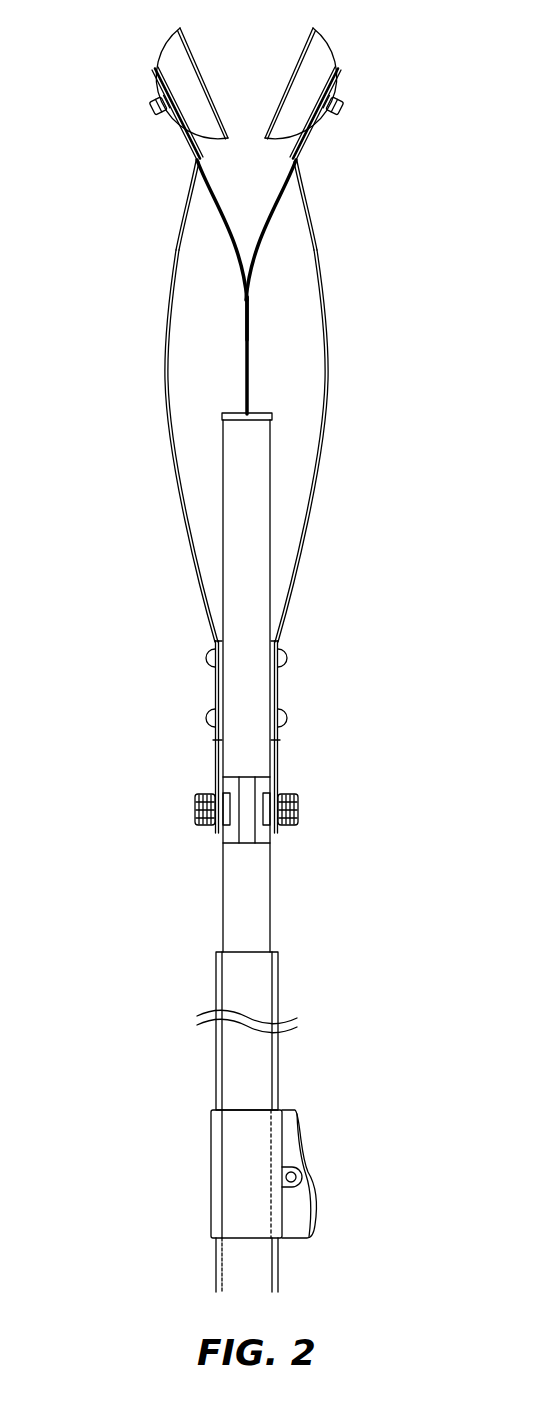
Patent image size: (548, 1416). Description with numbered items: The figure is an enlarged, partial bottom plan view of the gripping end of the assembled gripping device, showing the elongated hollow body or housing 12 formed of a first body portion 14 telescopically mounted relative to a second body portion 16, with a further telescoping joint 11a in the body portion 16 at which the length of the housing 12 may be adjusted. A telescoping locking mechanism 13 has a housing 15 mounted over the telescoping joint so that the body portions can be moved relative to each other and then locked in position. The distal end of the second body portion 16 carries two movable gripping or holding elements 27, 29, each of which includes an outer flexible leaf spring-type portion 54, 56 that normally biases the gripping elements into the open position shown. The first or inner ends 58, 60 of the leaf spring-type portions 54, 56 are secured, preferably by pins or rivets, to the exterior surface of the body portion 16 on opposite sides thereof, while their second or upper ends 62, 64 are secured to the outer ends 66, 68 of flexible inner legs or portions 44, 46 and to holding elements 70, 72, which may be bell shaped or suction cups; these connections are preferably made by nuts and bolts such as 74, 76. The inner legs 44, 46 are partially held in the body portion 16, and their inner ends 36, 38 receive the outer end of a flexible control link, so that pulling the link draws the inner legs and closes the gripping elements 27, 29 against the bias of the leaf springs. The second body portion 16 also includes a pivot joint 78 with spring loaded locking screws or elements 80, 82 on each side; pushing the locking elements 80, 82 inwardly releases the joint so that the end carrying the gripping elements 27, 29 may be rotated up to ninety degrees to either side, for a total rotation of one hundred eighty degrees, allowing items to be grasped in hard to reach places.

The joint 11a is at (244, 962).
The elongated hollow body or housing 12 is at (188, 995).
The telescoping locking means or mechanism 13 is at (203, 1158).
The first body portion 14 is at (217, 1265).
The housing 15 is at (260, 1145).
The second body portion 16 is at (220, 907).
The gripping or holding element 27 is at (165, 310).
The gripping or holding element 29 is at (330, 314).
The inner end 36 is at (247, 385).
The inner end 38 is at (247, 378).
The flexible inner leg or portion 44 is at (220, 213).
The flexible inner leg or portion 46 is at (273, 215).
The outer flexible leaf spring-type portion 54 is at (166, 422).
The outer flexible leaf spring-type portion 56 is at (332, 403).
The first or inner end 58 is at (213, 688).
The first or inner end 60 is at (280, 690).
The second or upper end 62 is at (177, 133).
The second or upper end 64 is at (314, 132).
The outer end 66 is at (207, 185).
The outer end 68 is at (290, 183).
The holding element 70 is at (187, 80).
The holding element 72 is at (317, 58).
The nut and bolt 74 is at (150, 95).
The nut and bolt 76 is at (347, 100).
The pivot joint 78 is at (282, 840).
The spring loaded locking screw or element 80 is at (195, 808).
The spring loaded locking screw or element 82 is at (300, 810).